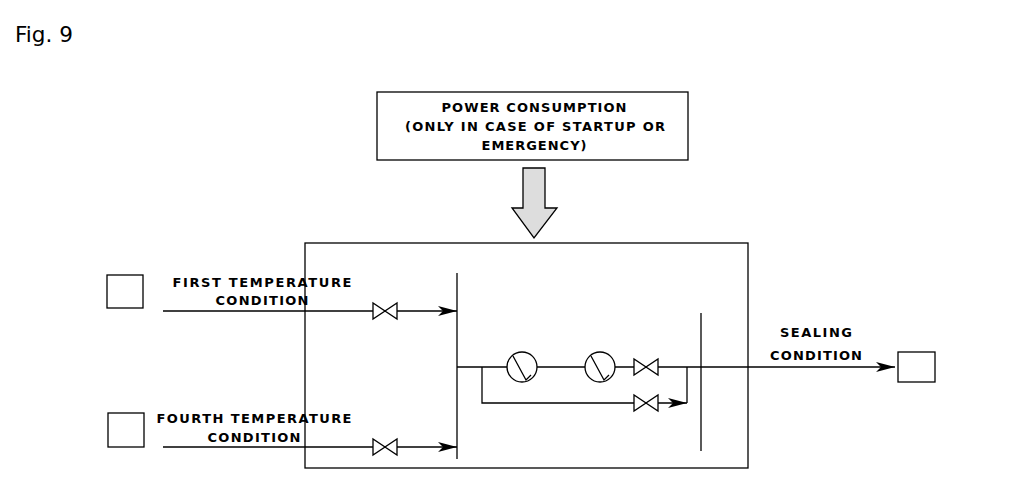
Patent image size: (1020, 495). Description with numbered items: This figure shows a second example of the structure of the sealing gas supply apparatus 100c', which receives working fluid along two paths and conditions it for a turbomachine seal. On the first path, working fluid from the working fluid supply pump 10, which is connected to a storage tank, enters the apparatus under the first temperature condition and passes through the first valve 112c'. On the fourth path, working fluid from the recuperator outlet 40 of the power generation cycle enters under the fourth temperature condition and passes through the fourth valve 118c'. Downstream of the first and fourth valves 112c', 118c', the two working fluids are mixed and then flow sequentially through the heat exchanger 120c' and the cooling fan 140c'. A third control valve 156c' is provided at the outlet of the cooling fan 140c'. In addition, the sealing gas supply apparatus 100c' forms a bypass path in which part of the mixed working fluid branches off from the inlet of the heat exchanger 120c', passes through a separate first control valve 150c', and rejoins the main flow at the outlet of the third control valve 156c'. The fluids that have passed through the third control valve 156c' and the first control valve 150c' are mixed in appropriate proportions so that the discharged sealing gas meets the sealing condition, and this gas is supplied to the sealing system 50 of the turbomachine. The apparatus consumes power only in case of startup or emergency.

The working fluid supply pump 10 is at (125, 291).
The recuperator outlet 40 is at (126, 430).
The sealing system 50 is at (916, 367).
The sealing gas supply apparatus 100c' is at (526, 355).
The first valve 112c' is at (390, 299).
The fourth valve 118c' is at (390, 435).
The heat exchanger 120c' is at (525, 357).
The cooling fan 140c' is at (603, 357).
The third control valve 156c' is at (655, 356).
The first control valve 150c' is at (652, 415).